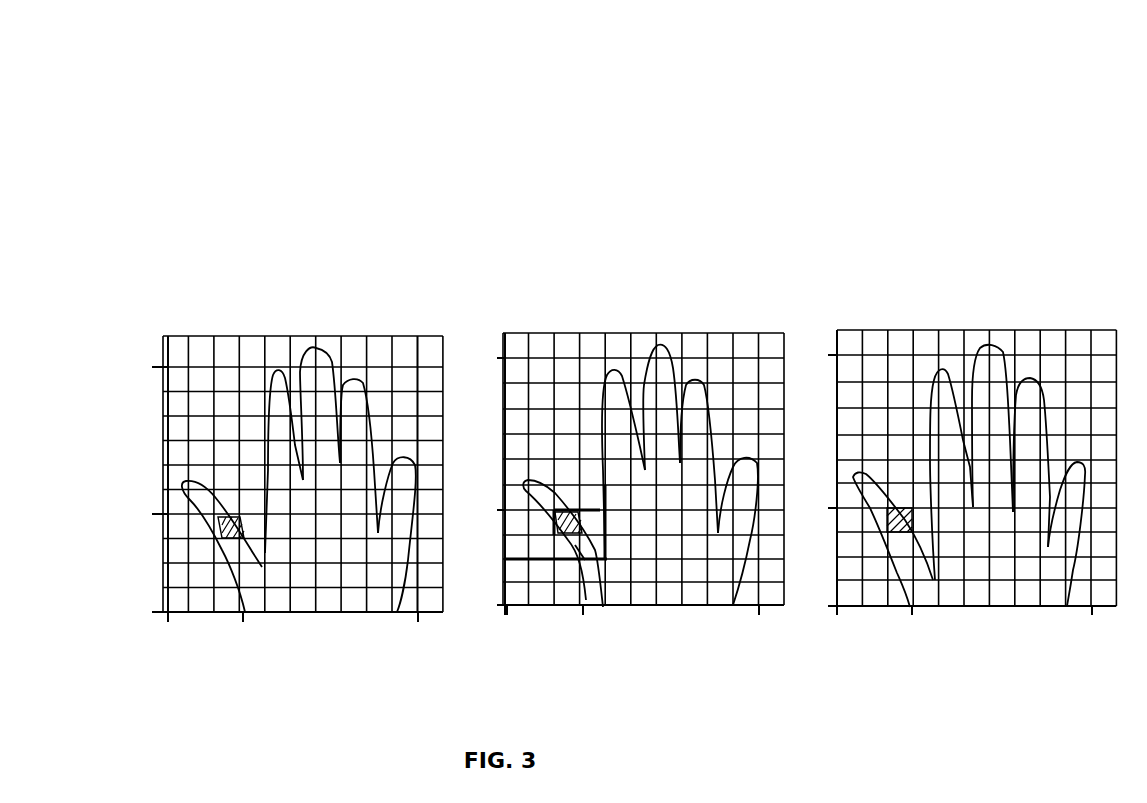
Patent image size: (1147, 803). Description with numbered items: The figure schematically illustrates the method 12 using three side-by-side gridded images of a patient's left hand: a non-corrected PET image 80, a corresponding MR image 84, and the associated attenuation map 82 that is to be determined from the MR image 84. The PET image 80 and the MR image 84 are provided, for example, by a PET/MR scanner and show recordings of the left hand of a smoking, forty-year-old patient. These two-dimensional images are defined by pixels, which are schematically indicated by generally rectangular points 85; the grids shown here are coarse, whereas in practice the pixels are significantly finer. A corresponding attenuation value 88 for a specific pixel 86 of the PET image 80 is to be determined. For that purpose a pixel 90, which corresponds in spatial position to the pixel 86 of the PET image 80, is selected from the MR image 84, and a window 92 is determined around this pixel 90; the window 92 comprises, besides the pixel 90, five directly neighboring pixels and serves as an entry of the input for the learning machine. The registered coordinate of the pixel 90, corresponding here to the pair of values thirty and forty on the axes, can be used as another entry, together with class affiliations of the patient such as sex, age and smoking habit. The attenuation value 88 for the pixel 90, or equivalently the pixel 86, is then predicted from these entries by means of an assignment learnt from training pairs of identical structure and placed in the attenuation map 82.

The method 12 is at (378, 105).
The non-corrected PET image 80 is at (209, 336).
The attenuation map 82 is at (897, 328).
The MR image 84 is at (542, 332).
The rectangular points 85 is at (422, 343).
The pixel 86 is at (217, 525).
The attenuation value 88 is at (885, 540).
The pixel 90 is at (566, 535).
The window 92 is at (585, 560).